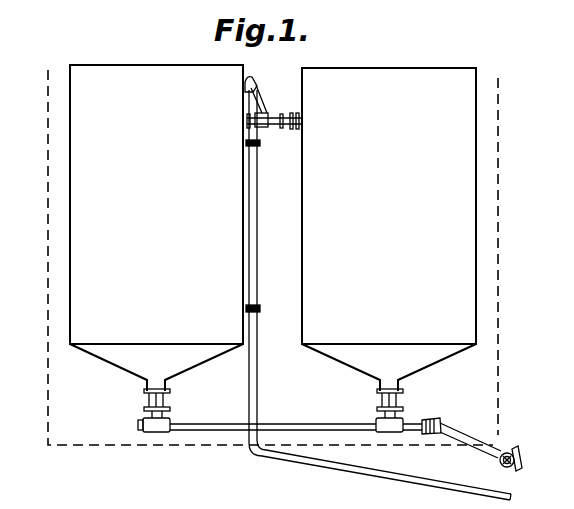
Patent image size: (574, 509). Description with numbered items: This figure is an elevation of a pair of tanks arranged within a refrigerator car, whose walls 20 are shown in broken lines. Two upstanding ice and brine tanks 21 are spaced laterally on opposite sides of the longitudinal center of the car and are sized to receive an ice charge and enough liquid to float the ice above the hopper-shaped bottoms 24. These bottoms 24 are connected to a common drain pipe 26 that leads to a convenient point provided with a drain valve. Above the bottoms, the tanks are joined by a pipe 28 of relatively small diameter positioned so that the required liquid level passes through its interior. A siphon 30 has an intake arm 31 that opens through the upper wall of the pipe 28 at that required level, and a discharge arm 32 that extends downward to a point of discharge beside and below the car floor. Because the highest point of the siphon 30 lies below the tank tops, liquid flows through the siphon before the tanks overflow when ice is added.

The walls of a refrigerator car 20 is at (500, 212).
The ice and brine tanks 21 is at (82, 318).
The bottoms of the tanks 24 is at (110, 361).
The drain pipe 26 is at (197, 432).
The pipe 28 is at (264, 128).
The siphon 30 is at (254, 86).
The intake arm 31 is at (265, 108).
The discharge arm 32 is at (257, 281).